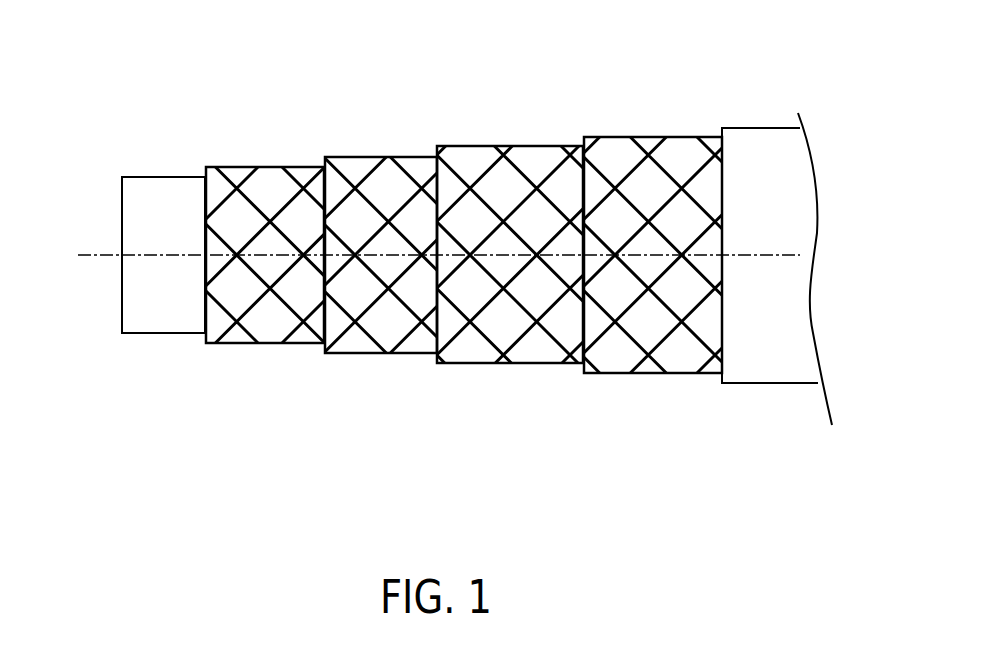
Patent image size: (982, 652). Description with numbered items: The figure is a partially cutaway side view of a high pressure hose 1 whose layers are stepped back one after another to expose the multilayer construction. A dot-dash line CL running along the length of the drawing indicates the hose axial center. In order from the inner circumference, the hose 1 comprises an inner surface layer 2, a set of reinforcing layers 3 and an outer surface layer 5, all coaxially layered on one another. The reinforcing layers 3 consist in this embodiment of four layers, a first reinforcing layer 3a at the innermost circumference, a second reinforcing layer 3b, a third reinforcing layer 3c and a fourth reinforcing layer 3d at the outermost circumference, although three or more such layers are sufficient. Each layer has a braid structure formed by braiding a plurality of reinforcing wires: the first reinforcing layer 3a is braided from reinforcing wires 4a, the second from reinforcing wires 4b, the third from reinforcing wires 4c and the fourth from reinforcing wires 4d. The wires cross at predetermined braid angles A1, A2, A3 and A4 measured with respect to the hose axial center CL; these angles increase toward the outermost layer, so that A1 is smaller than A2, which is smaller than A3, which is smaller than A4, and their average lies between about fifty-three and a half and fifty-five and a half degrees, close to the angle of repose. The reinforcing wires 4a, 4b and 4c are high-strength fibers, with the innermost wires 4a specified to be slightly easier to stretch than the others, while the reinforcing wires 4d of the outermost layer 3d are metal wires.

The high pressure hose 1 is at (738, 128).
The inner surface layer 2 is at (143, 322).
The reinforcing layers 3 is at (227, 442).
The first reinforcing layer 3a is at (249, 274).
The second reinforcing layer 3b is at (368, 276).
The third reinforcing layer 3c is at (510, 276).
The fourth reinforcing layer 3d is at (654, 273).
The reinforcing wires 4a is at (224, 308).
The reinforcing wires 4b is at (348, 340).
The reinforcing wires 4c is at (524, 340).
The reinforcing wires 4d is at (664, 343).
The outer surface layer 5 is at (762, 368).
The braid angle A1 is at (268, 219).
The braid angle A2 is at (382, 219).
The braid angle A3 is at (496, 220).
The braid angle A4 is at (646, 220).
The hose axial center CL is at (420, 259).